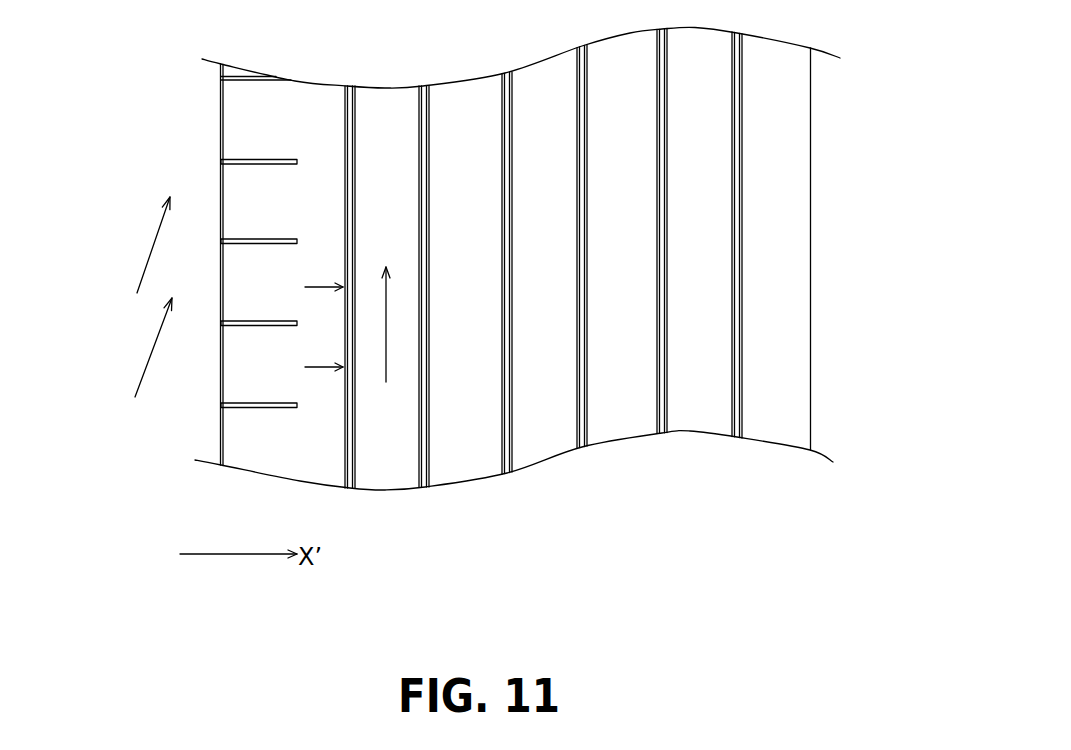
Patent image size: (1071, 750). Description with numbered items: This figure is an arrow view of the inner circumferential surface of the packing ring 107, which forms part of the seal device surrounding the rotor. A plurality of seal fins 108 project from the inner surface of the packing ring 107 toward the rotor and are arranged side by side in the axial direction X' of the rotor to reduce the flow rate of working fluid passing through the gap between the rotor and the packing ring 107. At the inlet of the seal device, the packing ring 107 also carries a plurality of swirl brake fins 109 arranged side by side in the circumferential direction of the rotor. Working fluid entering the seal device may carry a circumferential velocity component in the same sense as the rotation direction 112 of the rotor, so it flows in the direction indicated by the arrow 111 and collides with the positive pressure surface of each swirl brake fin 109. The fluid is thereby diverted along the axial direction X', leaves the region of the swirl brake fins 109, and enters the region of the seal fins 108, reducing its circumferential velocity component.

The packing ring 107 is at (822, 168).
The seal fin 108 is at (355, 415).
The swirl brake fin 109 is at (228, 159).
The direction of working fluid flow 111 is at (150, 252).
The rotation direction of the rotor 112 is at (387, 333).